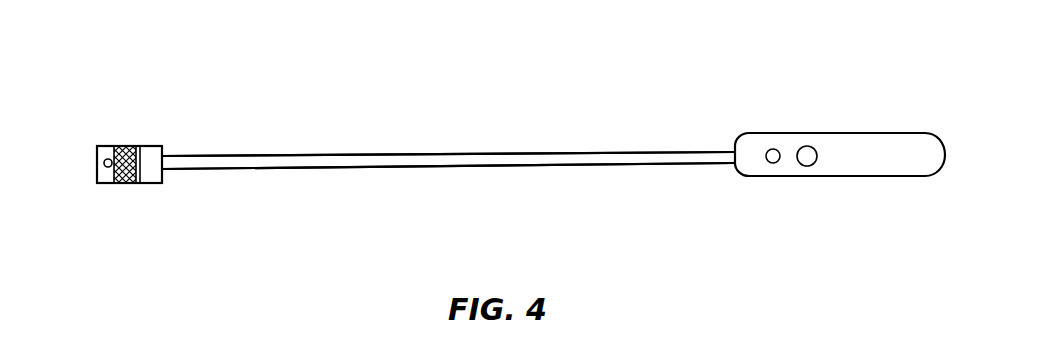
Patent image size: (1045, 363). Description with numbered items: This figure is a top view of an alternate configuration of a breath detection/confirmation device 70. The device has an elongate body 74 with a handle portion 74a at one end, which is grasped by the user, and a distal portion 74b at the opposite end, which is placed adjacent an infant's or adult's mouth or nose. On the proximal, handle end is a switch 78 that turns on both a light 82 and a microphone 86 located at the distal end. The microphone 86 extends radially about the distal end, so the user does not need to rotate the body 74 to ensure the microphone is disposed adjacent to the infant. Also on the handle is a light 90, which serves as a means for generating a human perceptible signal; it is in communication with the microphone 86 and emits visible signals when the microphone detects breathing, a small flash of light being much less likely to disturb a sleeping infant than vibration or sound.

The breath detection/confirmation device 70 is at (427, 115).
The elongate body 74 is at (508, 166).
The handle portion 74a is at (869, 162).
The distal portion 74b is at (148, 185).
The switch 78 is at (808, 166).
The light 82 is at (102, 156).
The microphone 86 is at (125, 148).
The light 90 is at (771, 165).